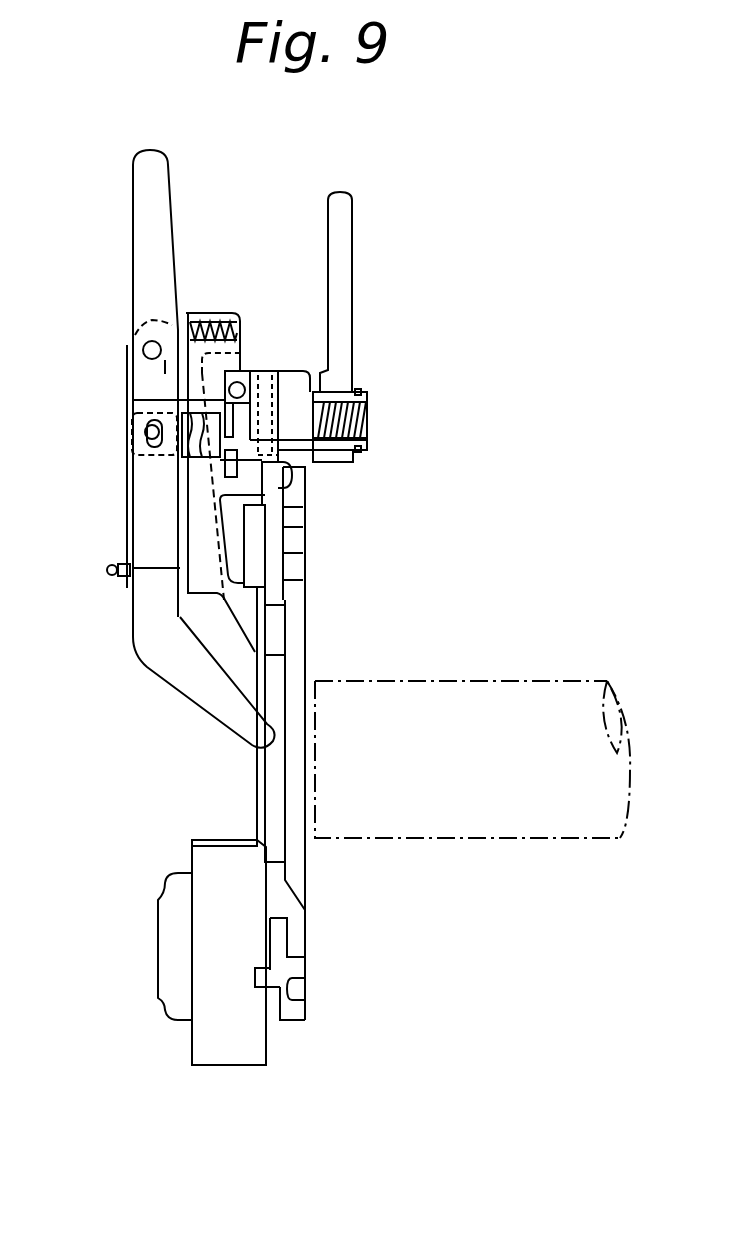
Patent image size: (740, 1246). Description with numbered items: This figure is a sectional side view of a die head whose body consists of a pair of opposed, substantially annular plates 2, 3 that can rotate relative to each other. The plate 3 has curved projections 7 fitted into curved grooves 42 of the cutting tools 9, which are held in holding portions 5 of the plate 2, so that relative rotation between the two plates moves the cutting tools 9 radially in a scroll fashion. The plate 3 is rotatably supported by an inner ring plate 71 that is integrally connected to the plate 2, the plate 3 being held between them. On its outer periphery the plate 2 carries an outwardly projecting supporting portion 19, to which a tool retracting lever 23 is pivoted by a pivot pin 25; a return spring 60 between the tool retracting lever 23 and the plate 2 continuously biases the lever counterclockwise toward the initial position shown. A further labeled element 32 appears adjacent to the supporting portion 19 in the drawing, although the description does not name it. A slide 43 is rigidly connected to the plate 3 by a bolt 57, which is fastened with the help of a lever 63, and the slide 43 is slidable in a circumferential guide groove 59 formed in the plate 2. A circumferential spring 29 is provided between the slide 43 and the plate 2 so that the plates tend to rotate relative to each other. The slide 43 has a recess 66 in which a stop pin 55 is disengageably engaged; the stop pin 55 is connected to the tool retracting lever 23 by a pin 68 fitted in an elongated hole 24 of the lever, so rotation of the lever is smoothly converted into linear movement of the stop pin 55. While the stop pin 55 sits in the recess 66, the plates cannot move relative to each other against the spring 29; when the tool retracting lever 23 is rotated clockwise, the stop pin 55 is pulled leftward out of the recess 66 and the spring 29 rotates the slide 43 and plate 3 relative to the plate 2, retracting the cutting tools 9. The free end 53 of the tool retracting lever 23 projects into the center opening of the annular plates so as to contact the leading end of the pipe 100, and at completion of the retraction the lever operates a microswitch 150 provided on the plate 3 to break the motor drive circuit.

The tool retracting lever 23 is at (150, 265).
The elongated hole 24 is at (158, 418).
The pivot pin 25 is at (152, 341).
The support member 32 is at (183, 313).
The supporting portion 19 is at (240, 320).
The return spring 60 is at (240, 358).
The lever 63 is at (346, 226).
The circumferential guide groove 59 is at (242, 373).
The circumferential spring 29 is at (250, 378).
The recess 66 is at (233, 437).
The bolt 57 is at (367, 412).
The slide 43 is at (340, 463).
The plate 3 is at (300, 467).
The plate 2 is at (263, 512).
The stop pin 55 is at (207, 455).
The pin 68 is at (147, 433).
The microswitch 150 is at (122, 577).
The inner ring plate 71 is at (305, 592).
The pipe 100 is at (505, 680).
The free end 53 is at (215, 712).
The cutting tool 9 is at (213, 847).
The holding portion 5 is at (163, 955).
The curved groove 42 is at (260, 977).
The curved projection 7 is at (272, 985).